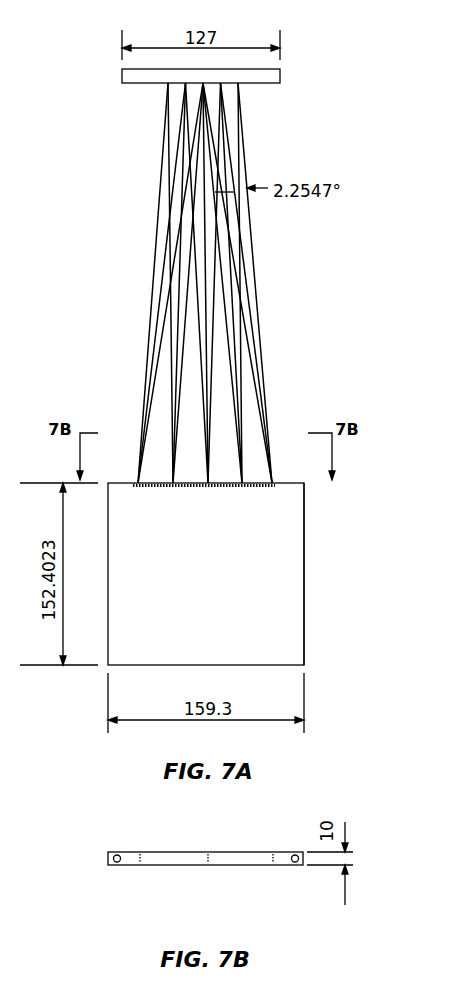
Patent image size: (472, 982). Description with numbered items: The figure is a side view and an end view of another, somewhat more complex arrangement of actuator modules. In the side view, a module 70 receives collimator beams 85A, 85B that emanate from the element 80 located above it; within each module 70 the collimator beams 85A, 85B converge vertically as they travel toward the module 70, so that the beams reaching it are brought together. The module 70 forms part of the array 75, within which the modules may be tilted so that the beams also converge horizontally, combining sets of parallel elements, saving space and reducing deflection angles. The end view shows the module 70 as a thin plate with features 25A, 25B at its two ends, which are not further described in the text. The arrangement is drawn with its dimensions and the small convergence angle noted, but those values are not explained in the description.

In FIG. 7A, the light source array 80 is at (289, 71).
In FIG. 7A, the light rays 85A is at (153, 236).
In FIG. 7A, the light rays 85B is at (259, 257).
In FIG. 7A, the module 70 is at (190, 589).
In FIG. 7B, the module 70 is at (170, 872).
In FIG. 7A, the array 75 is at (309, 569).
In FIG. 7B, the alignment hole 25A is at (118, 867).
In FIG. 7B, the alignment hole 25B is at (295, 867).